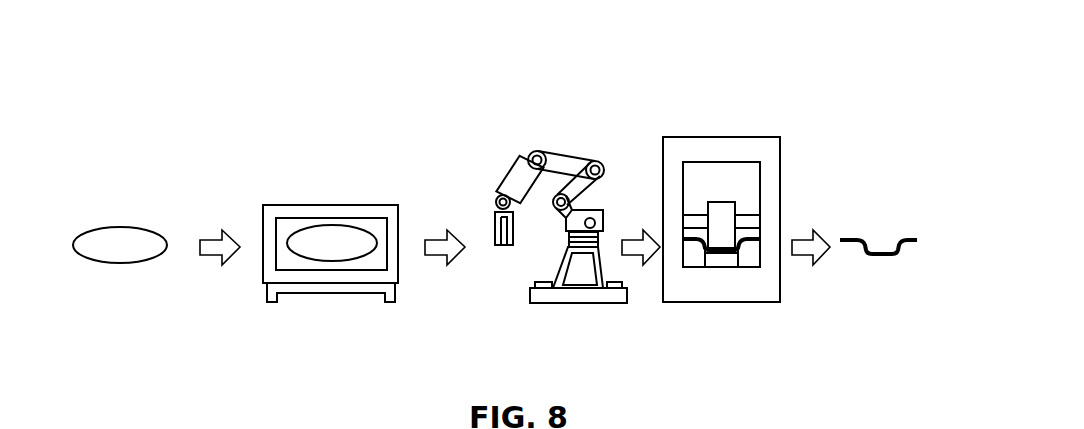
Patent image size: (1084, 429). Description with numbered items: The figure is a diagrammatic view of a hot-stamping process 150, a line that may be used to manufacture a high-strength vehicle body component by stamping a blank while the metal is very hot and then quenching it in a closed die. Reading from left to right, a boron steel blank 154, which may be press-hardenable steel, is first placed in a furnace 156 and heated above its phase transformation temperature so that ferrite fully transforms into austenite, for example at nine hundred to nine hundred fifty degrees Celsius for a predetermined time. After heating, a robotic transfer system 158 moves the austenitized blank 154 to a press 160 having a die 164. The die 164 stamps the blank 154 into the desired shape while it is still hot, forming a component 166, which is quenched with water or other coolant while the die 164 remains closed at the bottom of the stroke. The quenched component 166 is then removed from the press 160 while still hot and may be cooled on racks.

The hot-stamping process 150 is at (798, 34).
The boron steel blank 154 is at (120, 222).
The furnace 156 is at (332, 284).
The robotic transfer system 158 is at (567, 160).
The press 160 is at (722, 137).
The die 164 is at (753, 233).
The component 166 is at (875, 238).